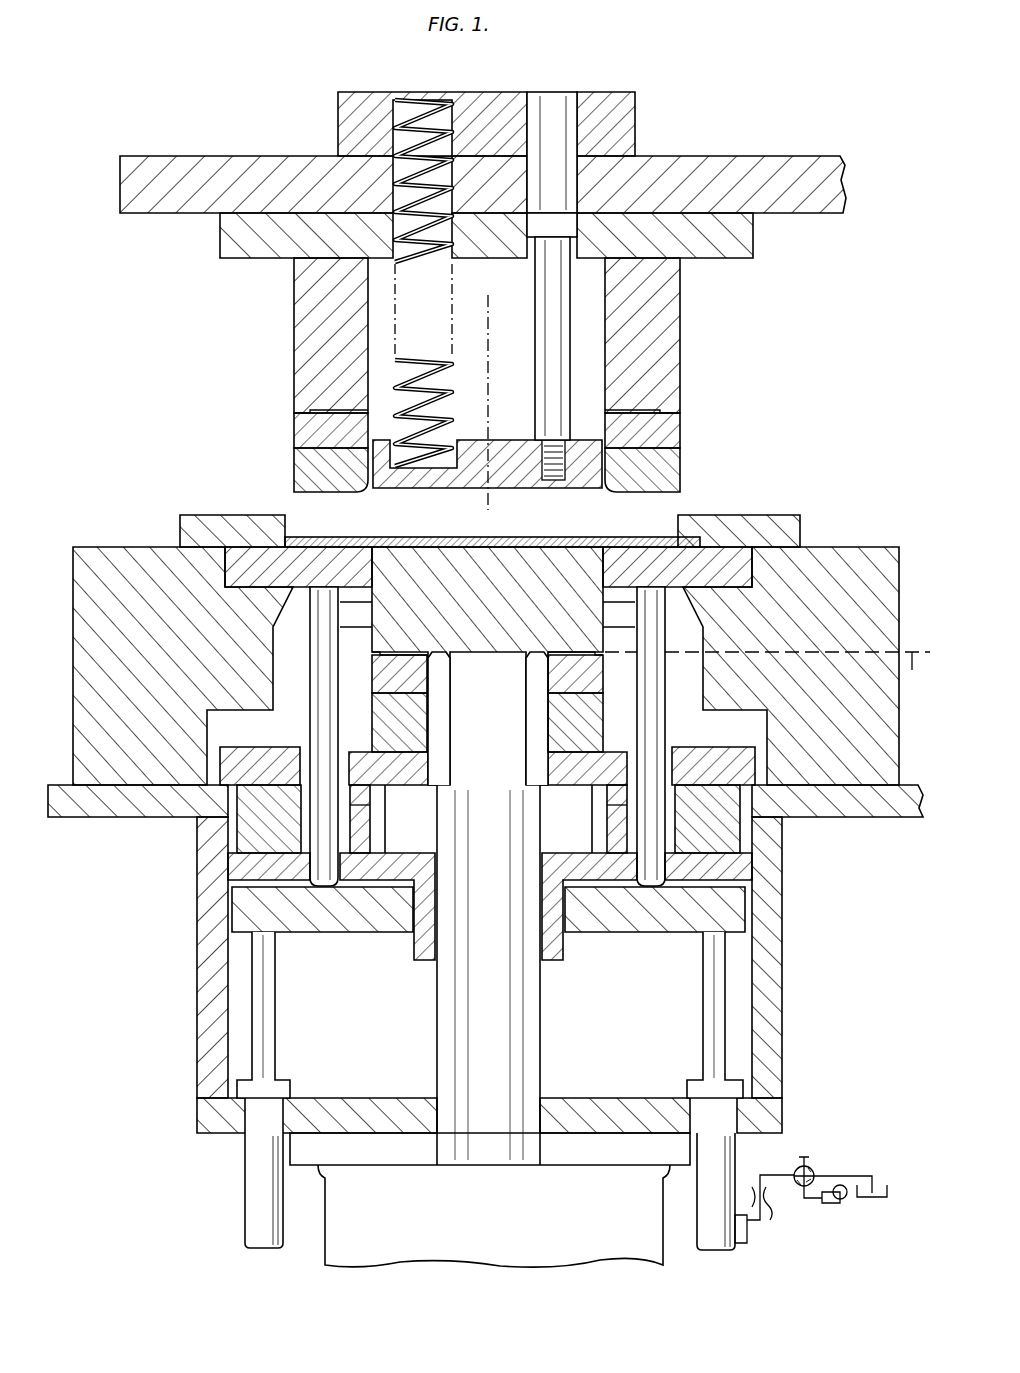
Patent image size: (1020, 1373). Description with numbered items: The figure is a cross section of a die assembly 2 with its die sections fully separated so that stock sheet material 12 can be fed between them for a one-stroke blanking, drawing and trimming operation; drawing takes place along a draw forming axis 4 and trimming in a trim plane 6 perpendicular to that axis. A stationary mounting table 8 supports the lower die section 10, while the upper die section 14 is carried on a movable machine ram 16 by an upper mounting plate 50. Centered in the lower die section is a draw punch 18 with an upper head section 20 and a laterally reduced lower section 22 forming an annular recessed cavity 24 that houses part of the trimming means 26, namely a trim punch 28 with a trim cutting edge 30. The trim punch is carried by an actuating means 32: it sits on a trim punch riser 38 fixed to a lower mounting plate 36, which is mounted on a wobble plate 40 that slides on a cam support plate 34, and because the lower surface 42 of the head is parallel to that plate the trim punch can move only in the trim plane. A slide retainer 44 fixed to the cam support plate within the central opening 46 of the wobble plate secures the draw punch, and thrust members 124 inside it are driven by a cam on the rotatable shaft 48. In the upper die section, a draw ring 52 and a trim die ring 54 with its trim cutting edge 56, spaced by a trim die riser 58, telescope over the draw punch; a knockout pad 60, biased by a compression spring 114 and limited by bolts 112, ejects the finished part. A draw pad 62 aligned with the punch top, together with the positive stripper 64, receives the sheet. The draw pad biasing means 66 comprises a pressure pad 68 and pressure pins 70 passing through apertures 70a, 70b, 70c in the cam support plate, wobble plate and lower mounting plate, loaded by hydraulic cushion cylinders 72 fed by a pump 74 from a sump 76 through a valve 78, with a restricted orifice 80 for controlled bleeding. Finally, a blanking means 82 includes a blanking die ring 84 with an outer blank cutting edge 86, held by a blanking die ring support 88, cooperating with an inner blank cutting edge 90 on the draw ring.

The die assembly 2 is at (718, 482).
The draw forming axis 4 is at (492, 500).
The trim plane 6 is at (767, 673).
The stationary mounting table 8 is at (864, 814).
The lower die section 10 is at (864, 540).
The stock sheet material 12 is at (333, 540).
The upper die section 14 is at (692, 312).
The machine ram 16 is at (820, 206).
The draw punch 18 is at (488, 666).
The upper head section 20 is at (618, 643).
The lower section 22 is at (520, 712).
The annular recessed cavity 24 is at (575, 674).
The trimming means 26 is at (630, 702).
The trim punch 28 is at (385, 680).
The trim cutting edge 30 is at (410, 658).
The actuating means 32 is at (700, 748).
The cam support plate 34 is at (768, 870).
The lower mounting plate 36 is at (262, 760).
The trim punch riser 38 is at (372, 727).
The wobble plate 40 is at (240, 840).
The lower surface 42 is at (440, 652).
The slide retainer 44 is at (425, 846).
The central opening 46 is at (600, 836).
The rotatable shaft 48 is at (438, 1024).
The upper mounting plate 50 is at (260, 255).
The draw ring 52 is at (298, 462).
The trim die ring 54 is at (672, 434).
The trim cutting edge 56 is at (365, 442).
The trim die riser 58 is at (672, 360).
The knockout pad 60 is at (588, 480).
The draw pad 62 is at (300, 590).
The positive stripper 64 is at (790, 518).
The draw pad biasing means 66 is at (278, 940).
The pressure pad 68 is at (668, 920).
The pressure pins 70 is at (320, 690).
The aperture 70a is at (676, 872).
The aperture 70b is at (672, 820).
The aperture 70c is at (680, 770).
The hydraulic cushion cylinders 72 is at (250, 1182).
The pump 74 is at (838, 1206).
The sump 76 is at (882, 1200).
The valve 78 is at (815, 1170).
The restricted orifice 80 is at (764, 1213).
The blanking means 82 is at (690, 482).
The blanking die ring 84 is at (750, 577).
The outer blank cutting edge 86 is at (680, 552).
The blanking die ring support 88 is at (832, 703).
The inner blank cutting edge 90 is at (642, 470).
The bolts 112 is at (536, 330).
The compression spring 114 is at (432, 262).
The thrust members 124 is at (380, 900).